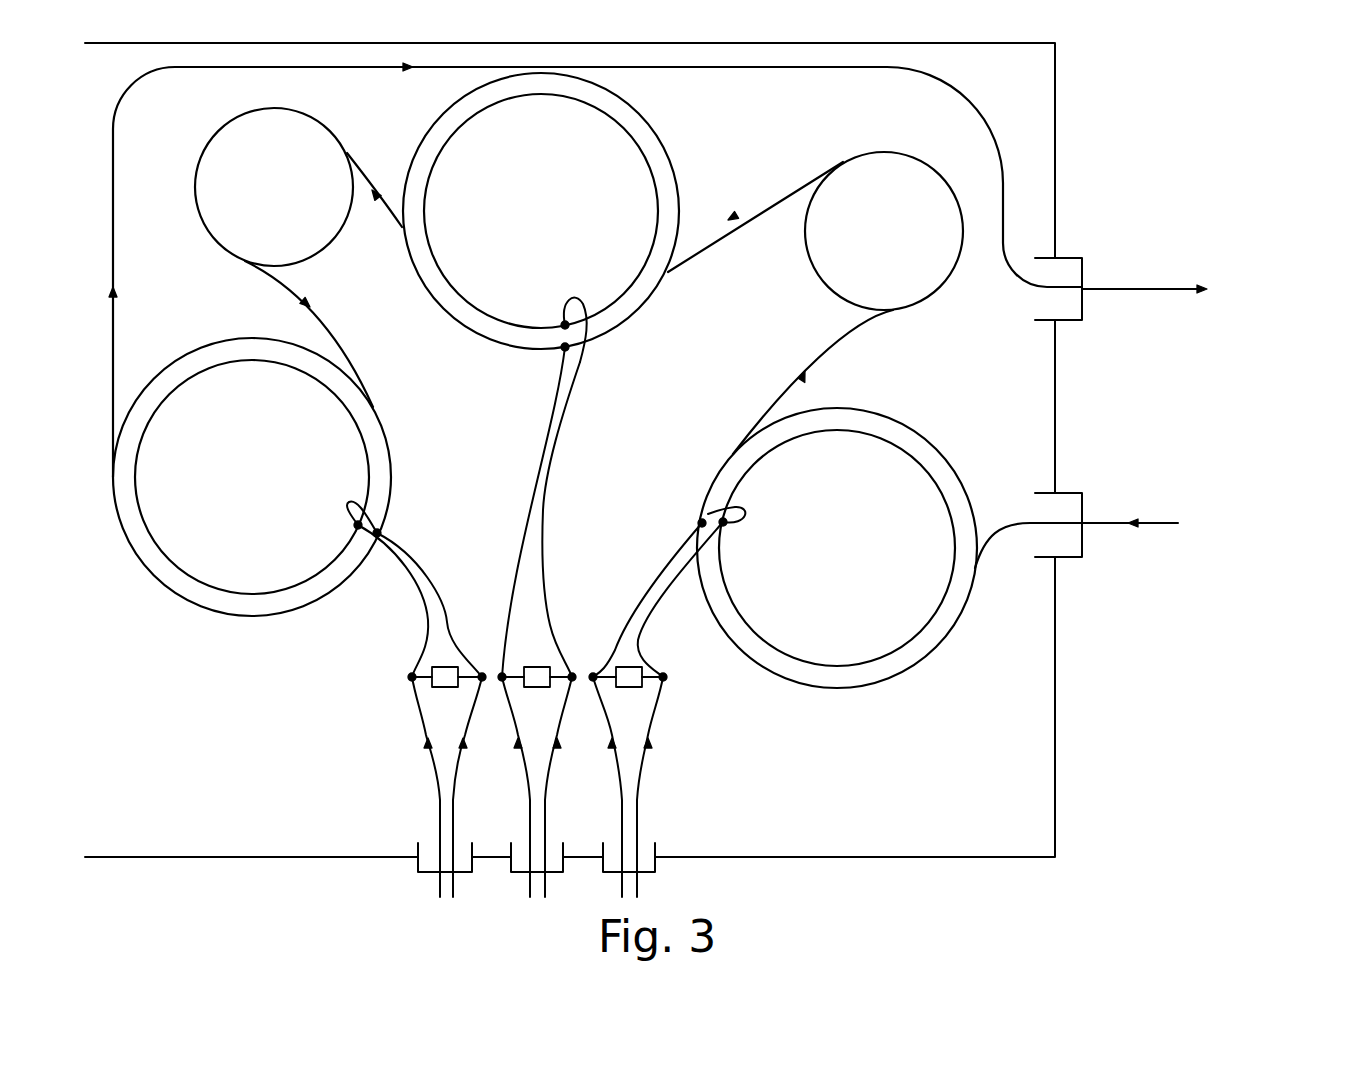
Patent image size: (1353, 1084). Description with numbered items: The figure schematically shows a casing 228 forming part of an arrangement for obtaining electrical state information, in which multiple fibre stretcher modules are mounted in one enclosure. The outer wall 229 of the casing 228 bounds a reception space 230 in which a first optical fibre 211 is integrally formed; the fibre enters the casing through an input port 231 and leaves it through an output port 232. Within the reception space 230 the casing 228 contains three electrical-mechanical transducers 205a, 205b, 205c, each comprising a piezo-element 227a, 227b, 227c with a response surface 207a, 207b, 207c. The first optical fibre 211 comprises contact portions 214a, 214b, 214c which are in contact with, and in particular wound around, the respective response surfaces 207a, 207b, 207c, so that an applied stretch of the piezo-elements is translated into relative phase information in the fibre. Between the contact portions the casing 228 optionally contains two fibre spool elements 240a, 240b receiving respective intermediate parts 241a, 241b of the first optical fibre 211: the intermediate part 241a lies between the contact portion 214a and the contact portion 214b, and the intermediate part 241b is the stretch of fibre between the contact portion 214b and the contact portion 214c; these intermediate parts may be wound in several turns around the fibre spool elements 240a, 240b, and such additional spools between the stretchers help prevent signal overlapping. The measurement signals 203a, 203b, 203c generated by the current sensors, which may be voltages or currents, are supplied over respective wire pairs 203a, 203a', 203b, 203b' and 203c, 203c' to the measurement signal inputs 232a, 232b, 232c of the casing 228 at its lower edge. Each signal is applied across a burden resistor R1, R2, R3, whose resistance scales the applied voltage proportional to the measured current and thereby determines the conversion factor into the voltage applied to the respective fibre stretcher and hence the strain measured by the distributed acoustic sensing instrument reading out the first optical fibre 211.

The casing 228 is at (663, 449).
The housing 229 is at (1055, 160).
The reception space 230 is at (978, 824).
The input fiber 231 is at (1138, 582).
The output fiber 232 is at (1128, 257).
The measurement signal input 232a is at (671, 837).
The measurement signal input 232b is at (565, 836).
The measurement signal input 232c is at (405, 839).
The first optical fibre 211 is at (867, 70).
The electrical-mechanical transducer 205a is at (824, 550).
The electrical-mechanical transducer 205b is at (587, 375).
The electrical-mechanical transducer 205c is at (309, 468).
The piezo-element 227a is at (880, 430).
The piezo-element 227b is at (653, 130).
The piezo-element 227c is at (215, 340).
The response surface 207a is at (941, 449).
The response surface 207b is at (674, 159).
The response surface 207c is at (188, 345).
The contact portion 214a is at (930, 655).
The contact portion 214b is at (630, 317).
The contact portion 214c is at (390, 448).
The fibre spool element 240a is at (808, 262).
The fibre spool element 240b is at (327, 235).
The intermediate part 241a is at (955, 270).
The intermediate part 241b is at (313, 118).
The burden resistor R1 is at (630, 670).
The burden resistor R2 is at (543, 672).
The burden resistor R3 is at (447, 675).
The measurement signal 203a is at (669, 787).
The electrical wire 203a' is at (695, 787).
The measurement signal 203b is at (421, 785).
The electrical wire 203b' is at (649, 787).
The measurement signal 203c is at (376, 787).
The electrical wire 203c' is at (492, 787).